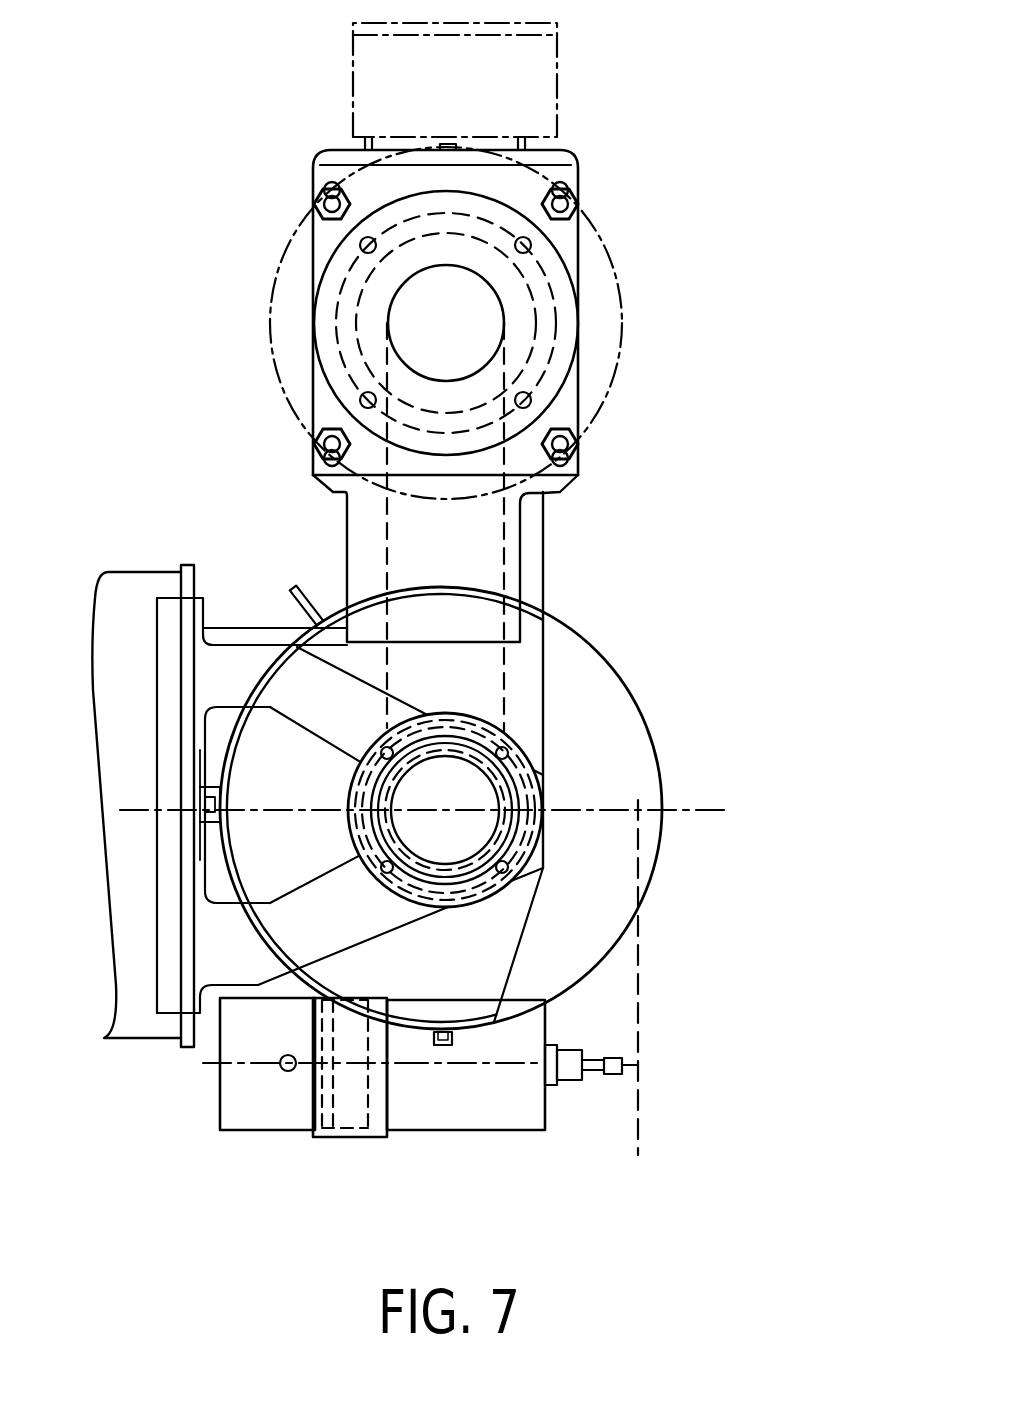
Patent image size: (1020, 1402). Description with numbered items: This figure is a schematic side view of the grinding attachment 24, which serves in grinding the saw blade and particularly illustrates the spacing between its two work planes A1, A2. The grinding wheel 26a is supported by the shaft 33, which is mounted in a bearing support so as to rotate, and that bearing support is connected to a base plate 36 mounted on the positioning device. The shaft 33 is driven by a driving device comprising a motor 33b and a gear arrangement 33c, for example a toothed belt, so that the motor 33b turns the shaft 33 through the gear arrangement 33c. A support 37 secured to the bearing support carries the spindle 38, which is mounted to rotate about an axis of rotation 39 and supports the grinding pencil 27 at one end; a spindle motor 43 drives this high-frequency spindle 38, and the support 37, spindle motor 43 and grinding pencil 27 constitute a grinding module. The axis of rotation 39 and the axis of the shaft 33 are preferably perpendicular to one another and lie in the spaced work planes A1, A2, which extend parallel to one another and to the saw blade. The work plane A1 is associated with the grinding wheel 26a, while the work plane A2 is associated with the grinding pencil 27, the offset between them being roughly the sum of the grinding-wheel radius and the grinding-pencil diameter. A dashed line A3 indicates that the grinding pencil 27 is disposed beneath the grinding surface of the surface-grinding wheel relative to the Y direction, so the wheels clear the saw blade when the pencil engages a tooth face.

The grinding attachment 24 is at (706, 388).
The motor 33b is at (610, 262).
The gear arrangement 33c is at (507, 553).
The base plate 36 is at (197, 610).
The grinding wheel 26a is at (607, 690).
The shaft 33 is at (485, 828).
The work plane A1 is at (685, 814).
The spindle motor 43 is at (485, 1105).
The support 37 is at (350, 1137).
The axis of rotation 39 is at (455, 1065).
The work plane A2 is at (210, 1065).
The spindle 38 is at (572, 1083).
The grinding pencil 27 is at (614, 1058).
The dashed line A3 is at (643, 1123).